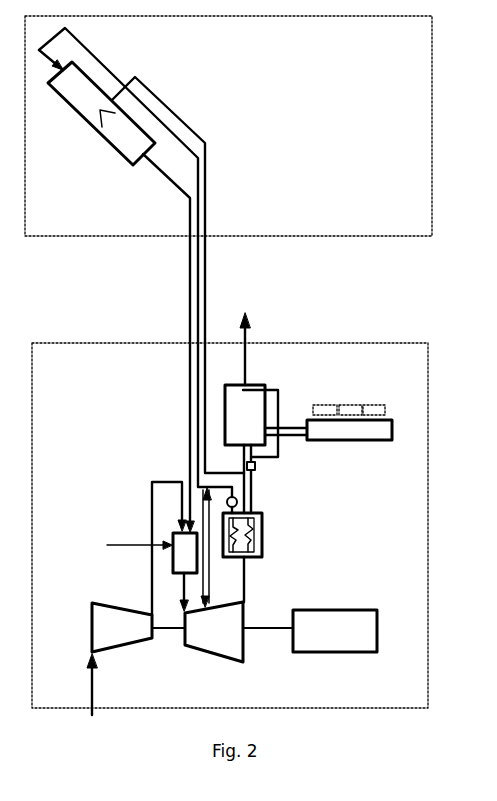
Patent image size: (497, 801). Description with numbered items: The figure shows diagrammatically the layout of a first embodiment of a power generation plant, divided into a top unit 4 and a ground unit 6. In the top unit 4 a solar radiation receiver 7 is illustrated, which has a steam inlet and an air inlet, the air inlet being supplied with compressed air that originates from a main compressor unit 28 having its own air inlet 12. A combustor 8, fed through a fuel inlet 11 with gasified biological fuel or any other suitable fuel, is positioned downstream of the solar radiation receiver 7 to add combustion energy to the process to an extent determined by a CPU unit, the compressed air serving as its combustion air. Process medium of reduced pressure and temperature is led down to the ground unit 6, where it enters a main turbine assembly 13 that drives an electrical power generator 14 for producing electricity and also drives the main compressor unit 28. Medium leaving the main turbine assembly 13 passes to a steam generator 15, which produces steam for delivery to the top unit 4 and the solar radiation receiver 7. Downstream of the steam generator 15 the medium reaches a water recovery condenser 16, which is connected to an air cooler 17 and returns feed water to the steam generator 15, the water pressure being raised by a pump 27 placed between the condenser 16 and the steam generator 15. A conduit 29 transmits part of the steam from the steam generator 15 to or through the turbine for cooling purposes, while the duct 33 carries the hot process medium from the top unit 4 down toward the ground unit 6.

The top unit 4 is at (433, 149).
The ground unit 6 is at (428, 517).
The solar radiation receiver 7 is at (72, 97).
The combustor 8 is at (182, 566).
The fuel inlet 11 is at (117, 553).
The air inlet 12 is at (85, 688).
The main turbine assembly 13 is at (222, 640).
The electrical power generator 14 is at (357, 618).
The steam generator 15 is at (257, 537).
The water recovery condenser 16 is at (257, 403).
The air cooler 17 is at (348, 433).
The pump 27 is at (257, 467).
The main compressor unit 28 is at (118, 640).
The conduit 29 is at (208, 552).
The hot air duct 33 is at (126, 73).